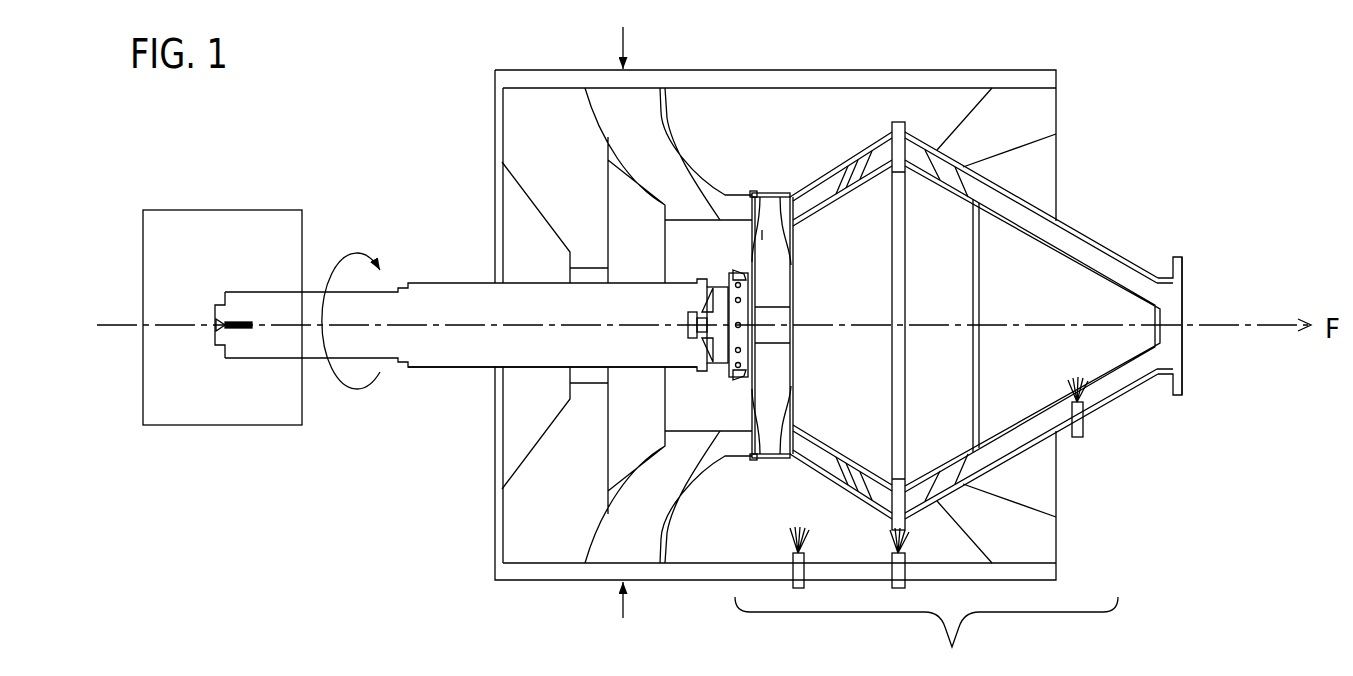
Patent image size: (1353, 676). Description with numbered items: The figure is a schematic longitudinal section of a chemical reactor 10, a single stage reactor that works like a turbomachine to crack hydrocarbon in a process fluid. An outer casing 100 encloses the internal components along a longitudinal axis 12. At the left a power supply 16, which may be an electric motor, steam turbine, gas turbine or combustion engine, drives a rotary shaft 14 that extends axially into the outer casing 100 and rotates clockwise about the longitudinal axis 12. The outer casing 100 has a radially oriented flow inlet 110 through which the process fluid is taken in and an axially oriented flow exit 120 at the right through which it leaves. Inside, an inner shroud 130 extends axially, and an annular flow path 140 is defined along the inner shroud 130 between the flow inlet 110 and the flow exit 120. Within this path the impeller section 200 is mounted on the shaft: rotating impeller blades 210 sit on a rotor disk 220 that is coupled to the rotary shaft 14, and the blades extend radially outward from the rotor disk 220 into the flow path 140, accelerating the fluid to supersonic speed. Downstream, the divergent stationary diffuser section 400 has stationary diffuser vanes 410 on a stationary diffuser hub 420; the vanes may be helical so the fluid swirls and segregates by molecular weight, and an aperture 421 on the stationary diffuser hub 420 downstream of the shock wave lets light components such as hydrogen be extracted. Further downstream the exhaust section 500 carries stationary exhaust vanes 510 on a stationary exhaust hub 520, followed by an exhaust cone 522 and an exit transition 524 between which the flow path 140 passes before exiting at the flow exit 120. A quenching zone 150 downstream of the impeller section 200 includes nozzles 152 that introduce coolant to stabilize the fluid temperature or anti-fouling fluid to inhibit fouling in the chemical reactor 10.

The chemical reactor 10 is at (1256, 105).
The longitudinal axis 12 is at (447, 325).
The rotary shaft 14 is at (460, 367).
The power supply 16 is at (220, 210).
The outer casing 100 is at (763, 69).
The flow inlet 110 is at (604, 69).
The flow exit 120 is at (1192, 300).
The inner shroud 130 is at (858, 150).
The flow path 140 is at (730, 208).
The quenching zone 150 is at (936, 518).
The nozzle 152 is at (1110, 443).
The impeller section 200 is at (762, 286).
The rotating impeller blades 210 is at (770, 207).
The rotor disk 220 is at (770, 250).
The stationary diffuser section 400 is at (822, 273).
The stationary diffuser vanes 410 is at (832, 190).
The stationary diffuser hub 420 is at (822, 420).
The aperture 421 is at (867, 180).
The exhaust section 500 is at (1046, 273).
The stationary exhaust vanes 510 is at (948, 180).
The stationary exhaust hub 520 is at (948, 292).
The exhaust cone 522 is at (1083, 353).
The exit transition 524 is at (1082, 235).